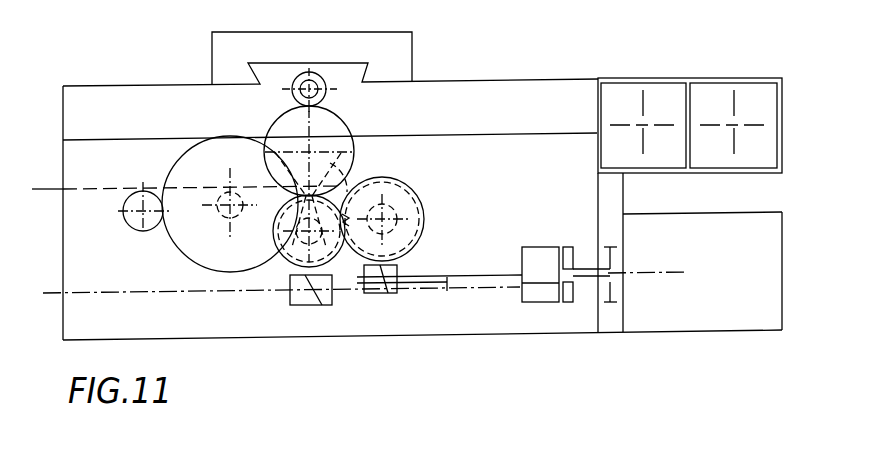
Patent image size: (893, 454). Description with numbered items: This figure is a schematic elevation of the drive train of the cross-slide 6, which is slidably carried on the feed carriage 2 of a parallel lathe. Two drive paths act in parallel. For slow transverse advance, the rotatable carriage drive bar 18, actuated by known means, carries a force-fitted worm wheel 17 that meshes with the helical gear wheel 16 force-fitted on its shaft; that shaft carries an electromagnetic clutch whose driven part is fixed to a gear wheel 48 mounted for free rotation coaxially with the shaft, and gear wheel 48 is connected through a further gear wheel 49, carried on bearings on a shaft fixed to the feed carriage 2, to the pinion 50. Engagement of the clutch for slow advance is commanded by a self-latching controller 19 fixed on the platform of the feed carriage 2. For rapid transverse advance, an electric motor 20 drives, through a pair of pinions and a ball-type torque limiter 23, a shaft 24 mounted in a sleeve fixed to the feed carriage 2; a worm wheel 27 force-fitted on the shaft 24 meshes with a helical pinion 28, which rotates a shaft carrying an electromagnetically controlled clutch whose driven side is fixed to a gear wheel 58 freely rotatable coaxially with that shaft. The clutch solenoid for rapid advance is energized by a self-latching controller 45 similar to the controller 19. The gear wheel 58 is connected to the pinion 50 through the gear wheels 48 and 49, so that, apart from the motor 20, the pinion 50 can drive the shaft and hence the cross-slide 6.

The feed carriage 2 is at (483, 323).
The cross-slide 6 is at (402, 50).
The helical gear wheel 16 is at (283, 265).
The worm wheel 17 is at (322, 305).
The carriage drive bar 18 is at (148, 293).
The controller 19 is at (658, 95).
The electric motor 20 is at (710, 322).
The torque limiter 23 is at (537, 312).
The shaft 24 is at (447, 284).
The worm wheel 27 is at (377, 294).
The helical pinion 28 is at (403, 202).
The self-latching controller 45 is at (745, 100).
The gear wheel 48 is at (343, 188).
The gear wheel 49 is at (343, 128).
The pinion 50 is at (317, 82).
The gear wheel 58 is at (420, 226).